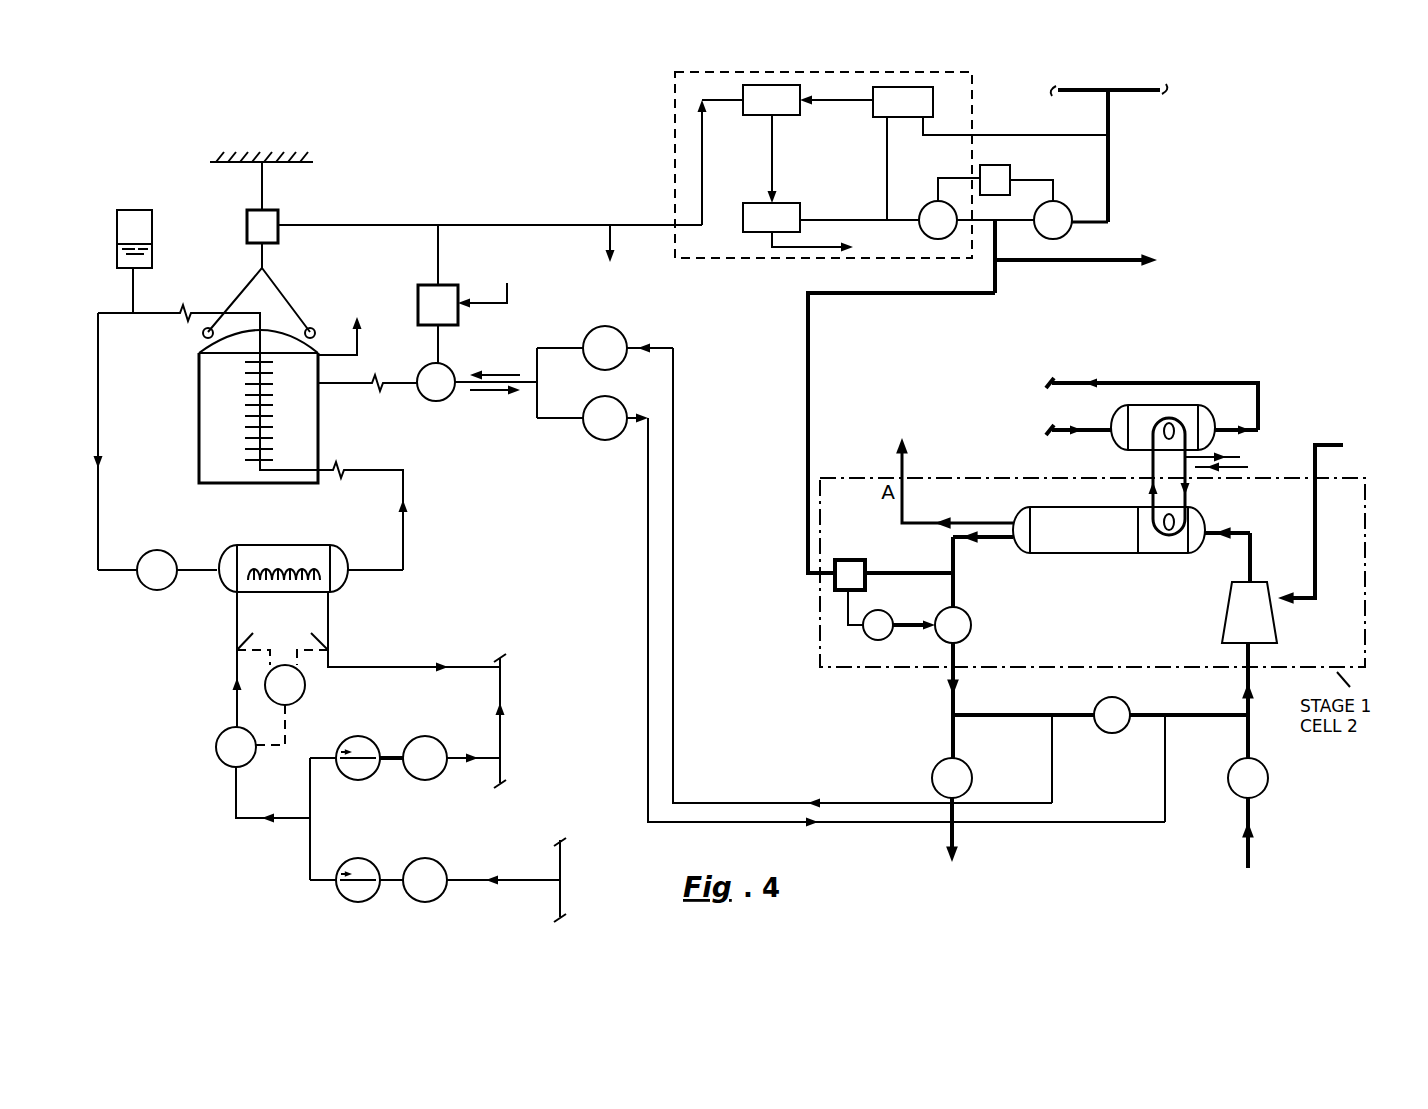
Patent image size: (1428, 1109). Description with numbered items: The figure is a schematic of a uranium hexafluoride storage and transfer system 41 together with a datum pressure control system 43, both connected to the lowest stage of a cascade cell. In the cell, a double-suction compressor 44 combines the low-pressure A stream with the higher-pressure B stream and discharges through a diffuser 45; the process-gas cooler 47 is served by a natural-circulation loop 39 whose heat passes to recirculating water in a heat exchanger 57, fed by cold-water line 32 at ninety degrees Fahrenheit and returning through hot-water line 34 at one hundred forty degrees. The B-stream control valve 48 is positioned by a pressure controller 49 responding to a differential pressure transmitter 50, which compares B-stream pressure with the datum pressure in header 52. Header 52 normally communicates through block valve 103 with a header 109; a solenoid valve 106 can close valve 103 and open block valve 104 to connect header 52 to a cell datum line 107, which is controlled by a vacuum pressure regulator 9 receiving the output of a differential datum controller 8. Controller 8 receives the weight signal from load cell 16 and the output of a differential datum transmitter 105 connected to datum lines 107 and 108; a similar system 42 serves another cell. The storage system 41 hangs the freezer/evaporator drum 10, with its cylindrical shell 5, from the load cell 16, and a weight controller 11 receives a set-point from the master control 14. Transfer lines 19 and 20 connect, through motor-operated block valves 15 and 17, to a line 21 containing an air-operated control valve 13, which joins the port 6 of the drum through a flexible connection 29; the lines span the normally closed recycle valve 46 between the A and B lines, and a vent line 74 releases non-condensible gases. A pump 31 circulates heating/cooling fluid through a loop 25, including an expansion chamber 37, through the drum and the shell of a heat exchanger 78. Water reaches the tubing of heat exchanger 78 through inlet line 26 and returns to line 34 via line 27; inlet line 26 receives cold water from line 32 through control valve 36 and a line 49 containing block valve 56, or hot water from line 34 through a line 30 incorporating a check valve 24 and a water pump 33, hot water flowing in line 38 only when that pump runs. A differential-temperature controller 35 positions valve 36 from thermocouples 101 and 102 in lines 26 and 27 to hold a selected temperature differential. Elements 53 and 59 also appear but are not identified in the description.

The UF6 storage and transfer system 41 is at (196, 206).
The load cell 16 is at (247, 217).
The expansion chamber 37 is at (117, 223).
The freezer/evaporator drum 10 is at (190, 412).
The loop 25 is at (100, 495).
The vent line 74 is at (360, 337).
The UF6 inlet/outlet port 6 is at (322, 386).
The flexible connection 29 is at (400, 402).
The pump 31 is at (160, 553).
The heat exchanger 78 is at (278, 545).
The inlet line 26 is at (235, 621).
The return line 27 is at (332, 621).
The thermocouple 101 is at (256, 636).
The thermocouple 102 is at (307, 636).
The differential-temperature controller 35 is at (305, 690).
The air-operated control valve 36 is at (219, 736).
The line 30 is at (310, 788).
The check valve 24 is at (365, 737).
The hot-water line 38 is at (389, 768).
The water pump 33 is at (433, 737).
The hot-water line 34 is at (505, 677).
The line 49 is at (310, 848).
The block valve 56 is at (373, 864).
The cold-water line 32 is at (558, 860).
The vertical cylindrical shell 5 is at (555, 225).
The differential datum controller 8 is at (745, 116).
The control system 42 is at (610, 302).
The weight controller 11 is at (418, 292).
The master control 14 is at (497, 275).
The air-operated control valve 13 is at (447, 366).
The line 21 is at (515, 385).
The motor-operated block valve 15 is at (588, 339).
The motor-operated block valve 17 is at (590, 433).
The UF6-transfer line 19 is at (673, 542).
The UF6-transfer line 20 is at (648, 552).
The datum pressure control system 43 is at (664, 96).
The differential datum transmitter 105 is at (872, 101).
The vacuum pressure regulator 9 is at (785, 203).
The cell datum line 107 is at (840, 220).
The block valve 104 is at (928, 204).
The solenoid valve 106 is at (1012, 170).
The block valve 103 is at (1068, 205).
The datum line 108 is at (1112, 121).
The header 109 is at (1138, 90).
The vacuum line 53 is at (770, 246).
The differential pressure transmitter 50 is at (858, 560).
The header 52 is at (806, 398).
The control valve 48 is at (968, 616).
The diffuser 45 is at (1103, 553).
The process-gas cooler 47 is at (1143, 533).
The natural-circulation loop 39 is at (1190, 503).
The heat exchanger 57 is at (1128, 416).
The double-suction compressor 44 is at (1232, 614).
The recycle valve 46 is at (1100, 705).
The valves 59 is at (933, 770).